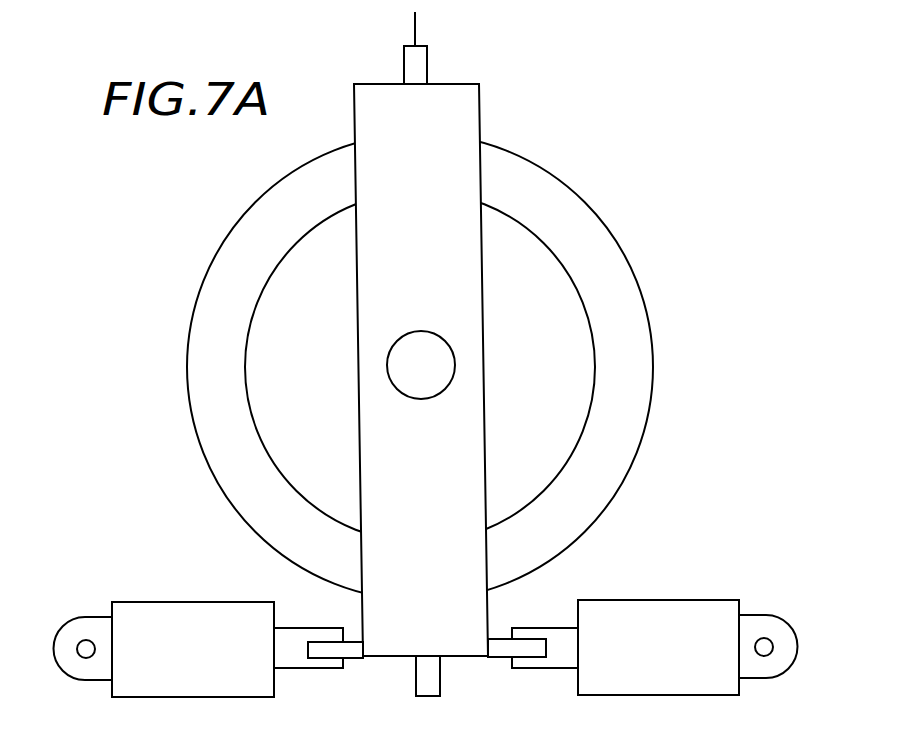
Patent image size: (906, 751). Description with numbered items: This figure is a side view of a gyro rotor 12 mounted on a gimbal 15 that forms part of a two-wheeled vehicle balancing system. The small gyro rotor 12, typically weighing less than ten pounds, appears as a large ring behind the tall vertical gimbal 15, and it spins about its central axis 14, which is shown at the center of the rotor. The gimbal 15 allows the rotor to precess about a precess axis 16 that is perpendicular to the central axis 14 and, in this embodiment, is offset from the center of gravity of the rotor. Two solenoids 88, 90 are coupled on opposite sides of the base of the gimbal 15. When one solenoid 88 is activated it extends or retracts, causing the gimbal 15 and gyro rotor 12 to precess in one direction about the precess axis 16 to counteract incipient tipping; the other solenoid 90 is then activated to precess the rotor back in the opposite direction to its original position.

The gyro rotor 12 is at (592, 238).
The central axis 14 is at (425, 362).
The gimbal 15 is at (468, 480).
The precess axis 16 is at (415, 26).
The solenoid 88 is at (202, 612).
The solenoid 90 is at (657, 615).